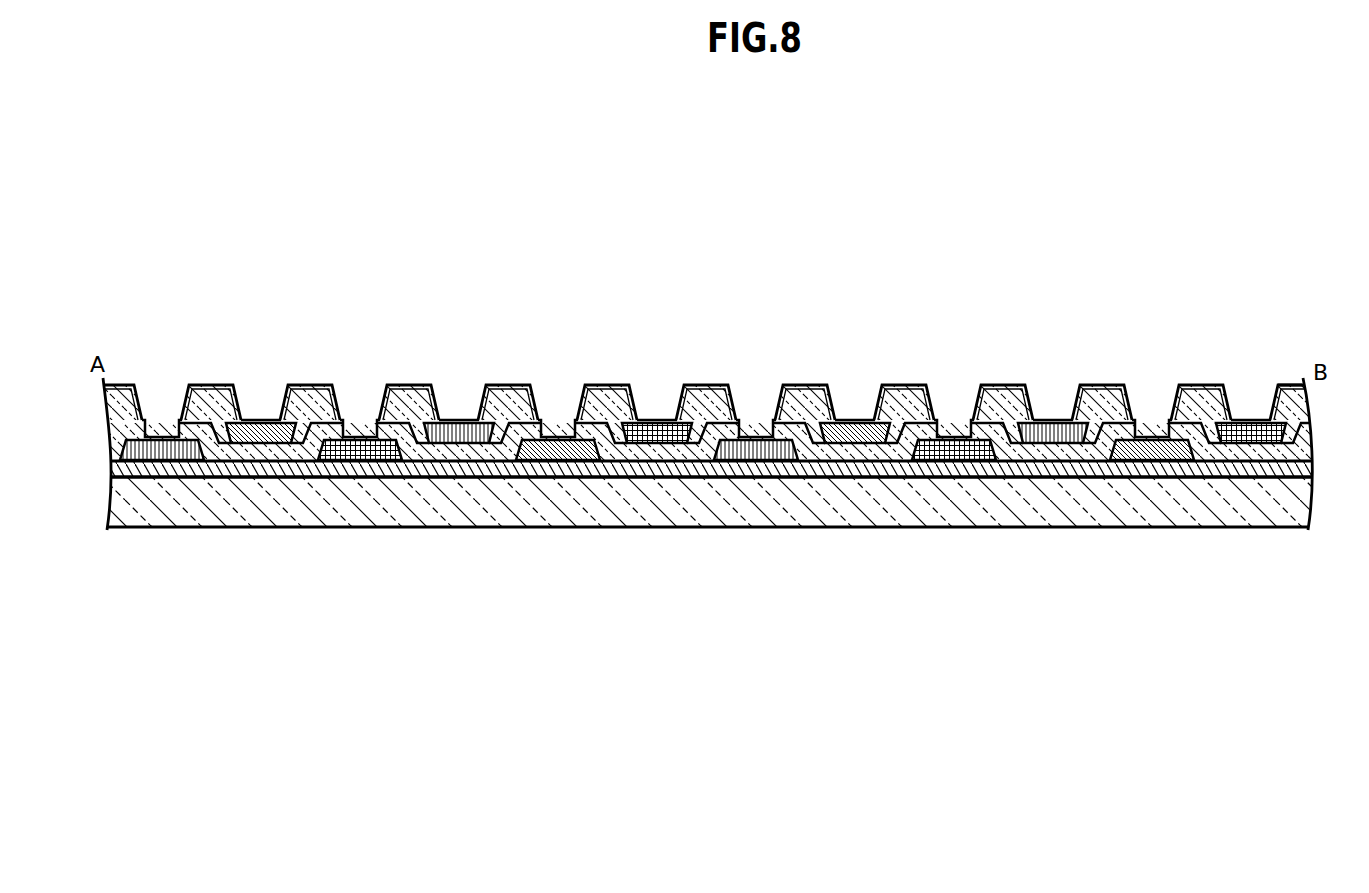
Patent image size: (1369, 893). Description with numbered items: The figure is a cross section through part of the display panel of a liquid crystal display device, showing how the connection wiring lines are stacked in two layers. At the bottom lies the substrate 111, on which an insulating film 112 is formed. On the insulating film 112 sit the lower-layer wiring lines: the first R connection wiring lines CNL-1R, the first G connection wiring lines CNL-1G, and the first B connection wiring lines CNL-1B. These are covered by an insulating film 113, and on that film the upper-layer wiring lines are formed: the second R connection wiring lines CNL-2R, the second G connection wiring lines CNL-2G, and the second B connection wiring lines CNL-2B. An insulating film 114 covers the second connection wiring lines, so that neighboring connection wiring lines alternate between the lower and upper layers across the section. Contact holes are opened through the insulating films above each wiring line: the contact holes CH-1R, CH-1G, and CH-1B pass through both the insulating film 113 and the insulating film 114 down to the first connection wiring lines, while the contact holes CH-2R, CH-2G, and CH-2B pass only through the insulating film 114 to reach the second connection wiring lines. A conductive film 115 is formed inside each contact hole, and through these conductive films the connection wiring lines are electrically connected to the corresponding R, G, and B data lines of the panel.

The substrate 111 is at (128, 508).
The insulating film 112 is at (123, 468).
The insulating film 113 is at (120, 448).
The insulating film 114 is at (120, 400).
The conductive film 115 is at (1281, 385).
The first R connection wiring line CNL-1R is at (465, 504).
The second G connection wiring line CNL-2G is at (566, 511).
The first B connection wiring line CNL-1B is at (663, 504).
The second R connection wiring line CNL-2R is at (764, 511).
The first G connection wiring line CNL-1G is at (862, 504).
The second B connection wiring line CNL-2B is at (962, 511).
The contact hole CH-1R is at (464, 371).
The contact hole CH-2G is at (563, 363).
The contact hole CH-1B is at (662, 371).
The contact hole CH-2R is at (761, 363).
The contact hole CH-1G is at (860, 371).
The contact hole CH-2B is at (959, 363).